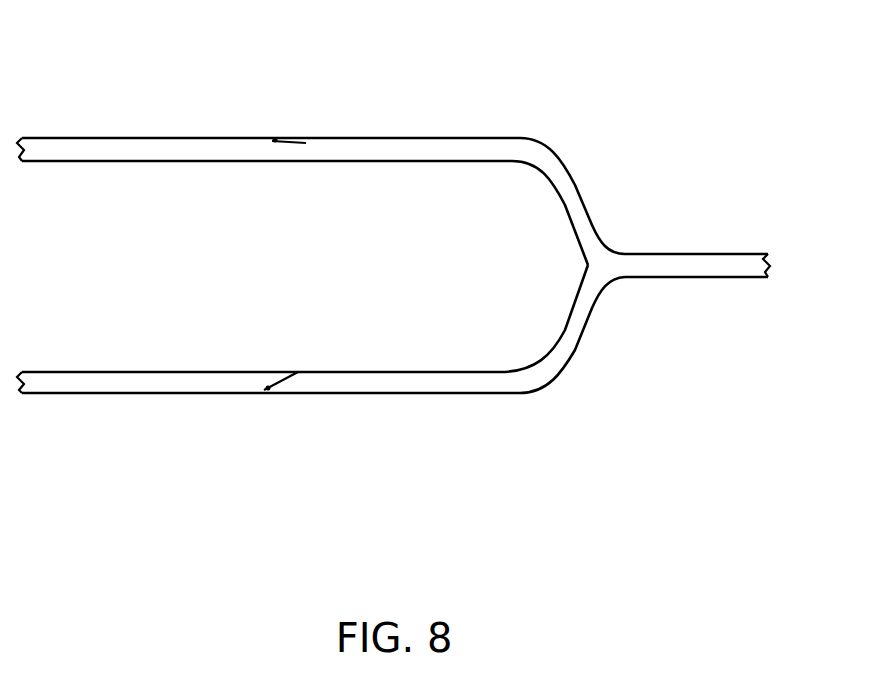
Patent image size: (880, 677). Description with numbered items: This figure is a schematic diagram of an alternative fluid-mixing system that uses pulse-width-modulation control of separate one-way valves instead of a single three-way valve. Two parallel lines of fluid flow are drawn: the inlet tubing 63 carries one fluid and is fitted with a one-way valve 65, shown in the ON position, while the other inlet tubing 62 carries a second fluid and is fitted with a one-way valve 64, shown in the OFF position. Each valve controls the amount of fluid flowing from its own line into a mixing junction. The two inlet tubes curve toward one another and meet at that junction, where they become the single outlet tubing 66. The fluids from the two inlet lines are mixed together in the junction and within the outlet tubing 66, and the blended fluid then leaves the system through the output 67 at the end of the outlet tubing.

The inlet tubing 62 is at (167, 382).
The inlet tubing 63 is at (173, 150).
The 1-way valve 64 is at (277, 390).
The 1-way valve 65 is at (290, 140).
The outlet tubing 66 is at (685, 265).
The output 67 is at (770, 272).